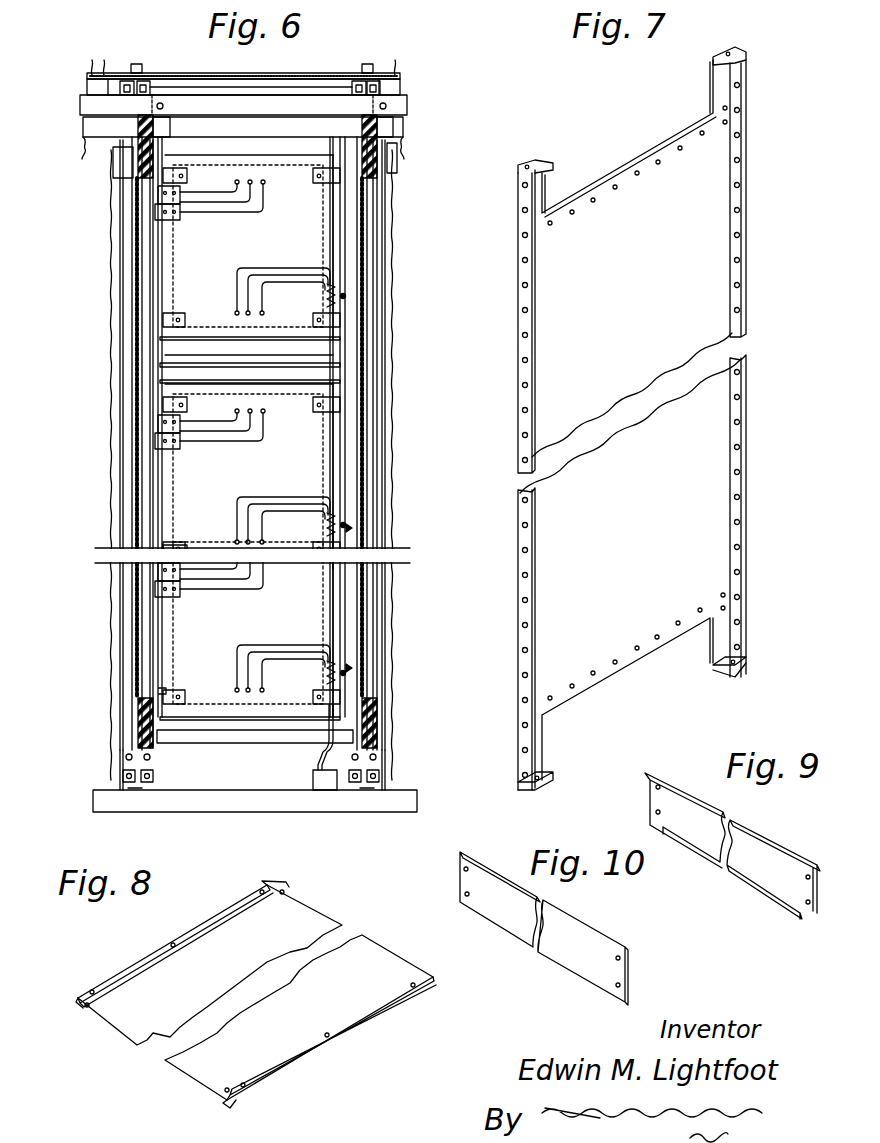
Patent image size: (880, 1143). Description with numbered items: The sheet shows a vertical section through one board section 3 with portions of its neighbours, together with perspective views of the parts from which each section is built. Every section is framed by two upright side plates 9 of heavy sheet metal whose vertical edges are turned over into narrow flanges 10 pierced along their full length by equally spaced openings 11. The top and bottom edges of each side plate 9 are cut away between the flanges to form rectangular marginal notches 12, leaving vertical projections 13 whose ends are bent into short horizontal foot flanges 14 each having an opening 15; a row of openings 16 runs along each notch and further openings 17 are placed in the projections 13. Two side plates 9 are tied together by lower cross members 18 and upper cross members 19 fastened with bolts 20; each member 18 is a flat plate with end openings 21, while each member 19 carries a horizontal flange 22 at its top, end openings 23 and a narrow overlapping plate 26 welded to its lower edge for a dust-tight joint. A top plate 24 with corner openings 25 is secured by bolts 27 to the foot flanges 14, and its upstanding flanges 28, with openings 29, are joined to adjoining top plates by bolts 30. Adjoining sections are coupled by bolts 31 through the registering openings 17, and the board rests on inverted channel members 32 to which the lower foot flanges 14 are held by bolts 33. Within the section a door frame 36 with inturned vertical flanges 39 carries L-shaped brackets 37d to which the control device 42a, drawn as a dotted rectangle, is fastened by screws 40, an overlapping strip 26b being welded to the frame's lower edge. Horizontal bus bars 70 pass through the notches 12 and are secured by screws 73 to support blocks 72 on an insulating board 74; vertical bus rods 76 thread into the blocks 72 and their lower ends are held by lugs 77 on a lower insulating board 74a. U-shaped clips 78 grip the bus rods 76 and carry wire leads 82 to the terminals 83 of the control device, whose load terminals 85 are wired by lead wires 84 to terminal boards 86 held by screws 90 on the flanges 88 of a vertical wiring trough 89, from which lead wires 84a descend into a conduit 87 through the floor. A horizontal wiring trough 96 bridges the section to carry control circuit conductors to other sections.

In FIG. 6, the board section 3 is at (243, 78).
In FIG. 6, the side plate 9 is at (140, 500).
In FIG. 7, the side plate 9 is at (639, 296).
In FIG. 6, the flange 10 is at (118, 767).
In FIG. 7, the flange 10 is at (743, 276).
In FIG. 7, the openings 11 is at (741, 450).
In FIG. 7, the marginal notch 12 is at (623, 163).
In FIG. 7, the vertical projection 13 is at (742, 74).
In FIG. 6, the foot flange 14 is at (118, 90).
In FIG. 7, the foot flange 14 is at (722, 56).
In FIG. 7, the opening 15 is at (728, 50).
In FIG. 7, the openings 16 is at (636, 186).
In FIG. 7, the openings 17 is at (721, 120).
In FIG. 6, the lower cross member 18 is at (100, 805).
In FIG. 10, the lower cross member 18 is at (586, 942).
In FIG. 6, the upper cross member 19 is at (90, 85).
In FIG. 9, the upper cross member 19 is at (693, 808).
In FIG. 6, the bolts 20 is at (148, 775).
In FIG. 10, the openings 21 is at (464, 893).
In FIG. 6, the horizontal flange 22 is at (282, 90).
In FIG. 9, the horizontal flange 22 is at (775, 846).
In FIG. 9, the openings 23 is at (655, 812).
In FIG. 6, the top plate 24 is at (200, 73).
In FIG. 8, the top plate 24 is at (255, 992).
In FIG. 8, the corner openings 25 is at (278, 889).
In FIG. 9, the overlapping plate 26 is at (752, 884).
In FIG. 6, the overlapping strip 26b is at (310, 365).
In FIG. 6, the bolts 27 is at (140, 82).
In FIG. 6, the flanges 28 is at (143, 80).
In FIG. 8, the flanges 28 is at (203, 927).
In FIG. 8, the openings 29 is at (92, 990).
In FIG. 6, the bolts 30 is at (134, 64).
In FIG. 6, the bolts 31 is at (155, 786).
In FIG. 6, the channel member 32 is at (415, 802).
In FIG. 6, the bolts 33 is at (122, 790).
In FIG. 6, the door frame 36 is at (170, 384).
In FIG. 6, the bracket 37d is at (318, 181).
In FIG. 6, the vertical flanges 39 is at (323, 237).
In FIG. 6, the screws 40 is at (186, 320).
In FIG. 6, the control device 42a is at (323, 240).
In FIG. 6, the horizontal bus bars 70 is at (80, 111).
In FIG. 6, the support blocks 72 is at (170, 131).
In FIG. 6, the screws 73 is at (165, 107).
In FIG. 6, the insulating board 74 is at (138, 170).
In FIG. 6, the insulating board 74a is at (138, 735).
In FIG. 6, the vertical bus rods 76 is at (160, 282).
In FIG. 6, the lugs 77 is at (160, 690).
In FIG. 6, the U-shaped clip 78 is at (170, 222).
In FIG. 6, the wire leads 82 is at (210, 213).
In FIG. 6, the terminals 83 is at (245, 178).
In FIG. 6, the lead wires 84 is at (280, 267).
In FIG. 6, the lead wires 84a is at (320, 758).
In FIG. 6, the load terminals 85 is at (263, 313).
In FIG. 6, the terminal board 86 is at (327, 294).
In FIG. 6, the conduit 87 is at (325, 792).
In FIG. 6, the flanges 88 is at (132, 405).
In FIG. 6, the wiring trough 89 is at (133, 433).
In FIG. 6, the screws 90 is at (352, 528).
In FIG. 6, the horizontal wiring trough 96 is at (95, 133).